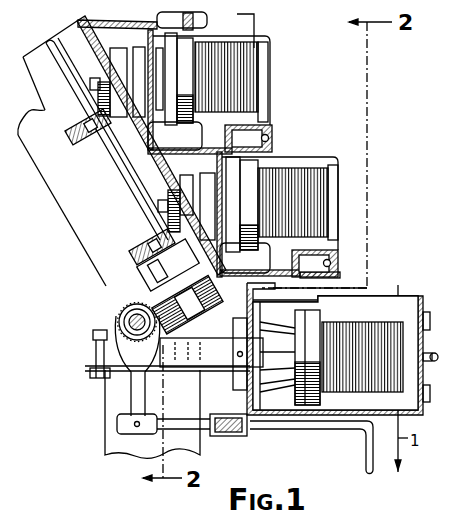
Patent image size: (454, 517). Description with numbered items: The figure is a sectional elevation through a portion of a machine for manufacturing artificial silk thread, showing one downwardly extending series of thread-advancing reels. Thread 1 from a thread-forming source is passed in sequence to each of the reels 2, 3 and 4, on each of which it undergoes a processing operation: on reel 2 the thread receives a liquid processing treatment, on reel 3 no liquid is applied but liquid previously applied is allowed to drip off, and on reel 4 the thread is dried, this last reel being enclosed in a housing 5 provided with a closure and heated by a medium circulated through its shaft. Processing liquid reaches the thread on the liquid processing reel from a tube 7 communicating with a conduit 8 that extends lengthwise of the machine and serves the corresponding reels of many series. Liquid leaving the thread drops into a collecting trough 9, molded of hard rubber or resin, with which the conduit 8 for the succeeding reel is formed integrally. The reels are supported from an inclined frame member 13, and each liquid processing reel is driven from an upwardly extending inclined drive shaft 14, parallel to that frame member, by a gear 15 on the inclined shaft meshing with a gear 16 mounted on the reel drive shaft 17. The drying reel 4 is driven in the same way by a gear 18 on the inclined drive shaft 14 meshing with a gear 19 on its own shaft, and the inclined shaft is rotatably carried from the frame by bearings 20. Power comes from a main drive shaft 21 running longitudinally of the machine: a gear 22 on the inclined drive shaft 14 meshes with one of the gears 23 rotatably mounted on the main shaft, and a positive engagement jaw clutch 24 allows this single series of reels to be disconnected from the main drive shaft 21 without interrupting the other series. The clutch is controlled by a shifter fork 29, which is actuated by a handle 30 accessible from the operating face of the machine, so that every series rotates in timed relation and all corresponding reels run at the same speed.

The thread 1 is at (268, 122).
The thread-advancing reel 2 is at (262, 72).
The thread-advancing reel 3 is at (320, 210).
The thread-advancing reel 4 is at (392, 325).
The housing 5 is at (380, 297).
The tube 7 is at (256, 30).
The conduit 8 is at (198, 14).
The collecting trough 9 is at (338, 257).
The inclined frame member 13 is at (63, 40).
The inclined drive shaft 14 is at (120, 192).
The gear 15 is at (64, 140).
The gear 16 is at (112, 118).
The reel drive shaft 17 is at (92, 82).
The gear 18 is at (211, 354).
The gear 19 is at (172, 382).
The bearing 20 is at (165, 272).
The main drive shaft 21 is at (433, 340).
The gear 22 is at (180, 298).
The gear 23 is at (112, 312).
The jaw clutch 24 is at (95, 356).
The shifter fork 29 is at (137, 395).
The handle 30 is at (287, 432).